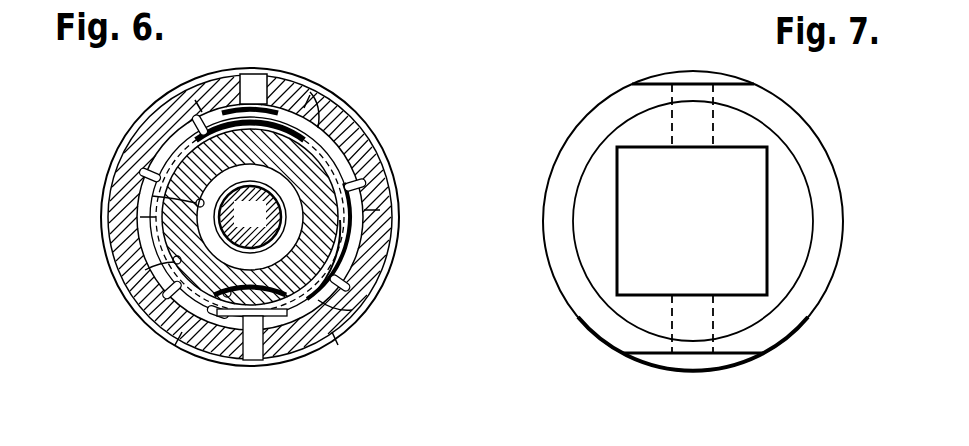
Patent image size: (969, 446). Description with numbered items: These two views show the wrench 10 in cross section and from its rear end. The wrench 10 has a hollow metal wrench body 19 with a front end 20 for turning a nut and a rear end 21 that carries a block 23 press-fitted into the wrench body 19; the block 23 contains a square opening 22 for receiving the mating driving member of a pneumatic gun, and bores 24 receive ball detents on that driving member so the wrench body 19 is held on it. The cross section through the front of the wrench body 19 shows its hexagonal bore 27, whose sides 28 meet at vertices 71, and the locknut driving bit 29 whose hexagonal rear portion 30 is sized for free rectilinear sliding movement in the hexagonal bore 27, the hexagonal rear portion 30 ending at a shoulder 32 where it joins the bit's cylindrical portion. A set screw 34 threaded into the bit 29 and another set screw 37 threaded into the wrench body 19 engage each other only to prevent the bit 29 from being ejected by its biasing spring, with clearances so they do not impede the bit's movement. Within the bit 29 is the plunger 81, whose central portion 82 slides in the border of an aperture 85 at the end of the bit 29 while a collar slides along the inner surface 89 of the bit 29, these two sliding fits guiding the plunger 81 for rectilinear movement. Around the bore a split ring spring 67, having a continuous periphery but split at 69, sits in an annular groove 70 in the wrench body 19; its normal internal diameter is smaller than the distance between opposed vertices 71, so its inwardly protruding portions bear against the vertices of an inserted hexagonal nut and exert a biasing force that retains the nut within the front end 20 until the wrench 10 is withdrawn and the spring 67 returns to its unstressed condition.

In FIG. 7, the wrench 10 is at (586, 82).
In FIG. 6, the wrench body 19 is at (312, 80).
In FIG. 7, the wrench body 19 is at (572, 310).
In FIG. 6, the front end 20 is at (356, 116).
In FIG. 7, the rear end 21 is at (782, 116).
In FIG. 7, the square opening 22 is at (762, 176).
In FIG. 7, the block 23 is at (790, 243).
In FIG. 7, the bores 24 is at (672, 150).
In FIG. 6, the hexagonal bore 27 is at (380, 164).
In FIG. 6, the sides 28 is at (150, 175).
In FIG. 6, the locknut driving bit 29 is at (360, 310).
In FIG. 6, the hexagonal rear portion 30 is at (145, 270).
In FIG. 6, the shoulder 32 is at (236, 104).
In FIG. 6, the set screw 34 is at (142, 122).
In FIG. 6, the set screw 37 is at (272, 88).
In FIG. 6, the split ring spring 67 is at (376, 142).
In FIG. 6, the split 69 is at (255, 322).
In FIG. 6, the annular groove 70 is at (355, 243).
In FIG. 6, the vertices 71 is at (195, 100).
In FIG. 6, the plunger 81 is at (238, 228).
In FIG. 6, the central portion 82 is at (224, 244).
In FIG. 6, the aperture 85 is at (162, 236).
In FIG. 6, the inner surface 89 is at (152, 196).